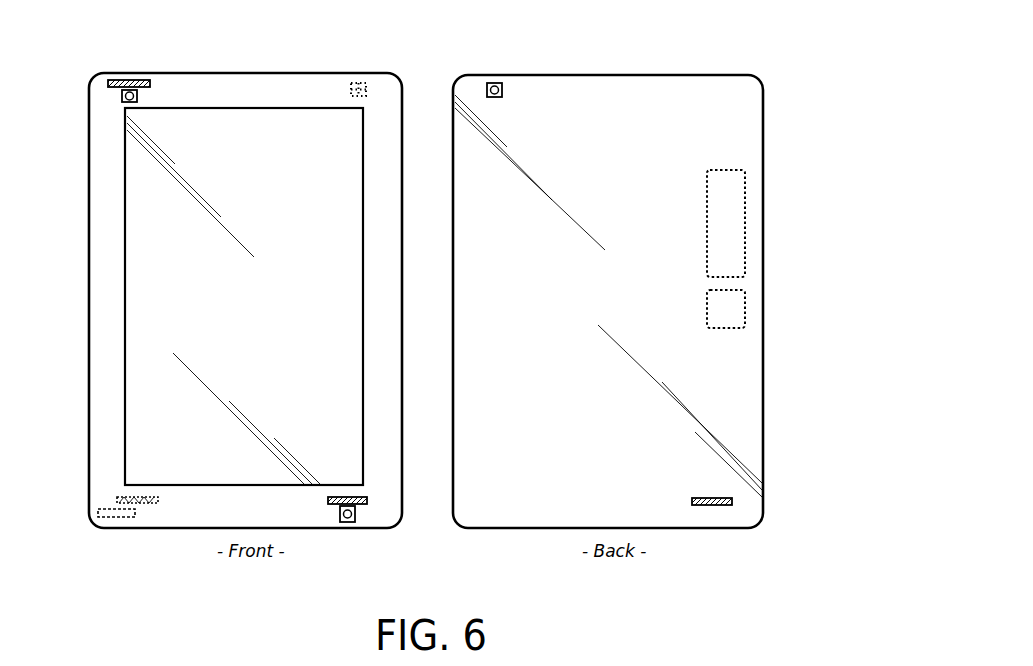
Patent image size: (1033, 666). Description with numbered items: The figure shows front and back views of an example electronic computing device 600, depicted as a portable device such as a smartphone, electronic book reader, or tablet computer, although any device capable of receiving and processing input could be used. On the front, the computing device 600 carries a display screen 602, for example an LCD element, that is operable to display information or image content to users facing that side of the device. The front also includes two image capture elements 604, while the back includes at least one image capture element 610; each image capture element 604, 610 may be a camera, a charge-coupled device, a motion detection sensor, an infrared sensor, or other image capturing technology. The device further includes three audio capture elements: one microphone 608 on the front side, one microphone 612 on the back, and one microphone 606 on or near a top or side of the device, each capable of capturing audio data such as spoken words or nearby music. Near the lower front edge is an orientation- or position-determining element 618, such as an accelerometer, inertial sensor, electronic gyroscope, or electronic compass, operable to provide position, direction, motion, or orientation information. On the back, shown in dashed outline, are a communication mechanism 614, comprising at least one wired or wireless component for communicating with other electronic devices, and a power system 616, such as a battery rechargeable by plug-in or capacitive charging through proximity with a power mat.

The electronic computing device 600 is at (788, 82).
The display screen 602 is at (125, 217).
The image capture element 604 is at (122, 96).
The microphone 606 is at (140, 80).
The microphone 608 is at (362, 505).
The image capture element 610 is at (355, 84).
The microphone 612 is at (140, 505).
The communication mechanism 614 is at (745, 240).
The power system 616 is at (745, 312).
The orientation- or position-determining element 618 is at (115, 517).